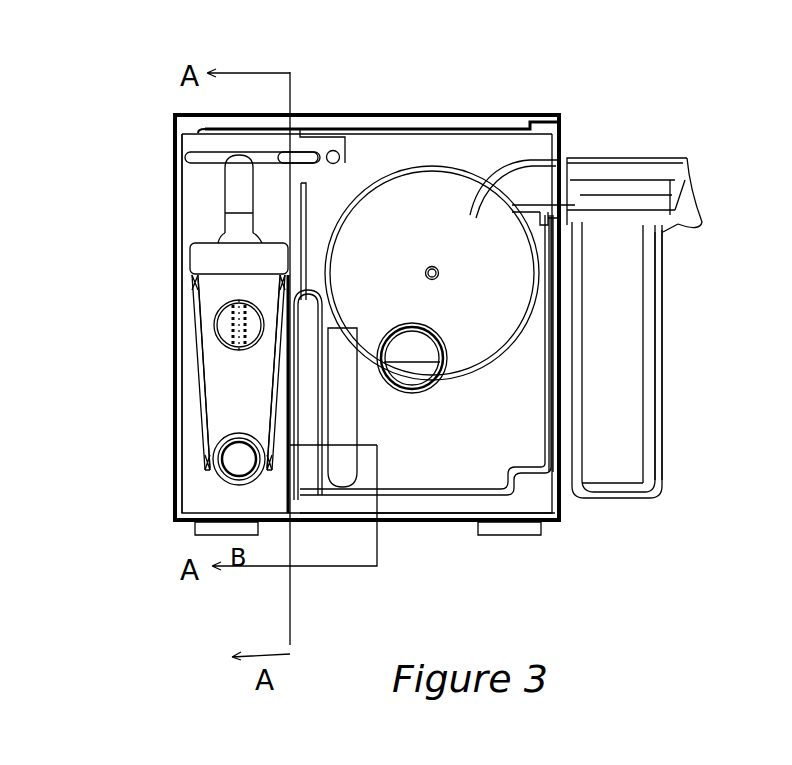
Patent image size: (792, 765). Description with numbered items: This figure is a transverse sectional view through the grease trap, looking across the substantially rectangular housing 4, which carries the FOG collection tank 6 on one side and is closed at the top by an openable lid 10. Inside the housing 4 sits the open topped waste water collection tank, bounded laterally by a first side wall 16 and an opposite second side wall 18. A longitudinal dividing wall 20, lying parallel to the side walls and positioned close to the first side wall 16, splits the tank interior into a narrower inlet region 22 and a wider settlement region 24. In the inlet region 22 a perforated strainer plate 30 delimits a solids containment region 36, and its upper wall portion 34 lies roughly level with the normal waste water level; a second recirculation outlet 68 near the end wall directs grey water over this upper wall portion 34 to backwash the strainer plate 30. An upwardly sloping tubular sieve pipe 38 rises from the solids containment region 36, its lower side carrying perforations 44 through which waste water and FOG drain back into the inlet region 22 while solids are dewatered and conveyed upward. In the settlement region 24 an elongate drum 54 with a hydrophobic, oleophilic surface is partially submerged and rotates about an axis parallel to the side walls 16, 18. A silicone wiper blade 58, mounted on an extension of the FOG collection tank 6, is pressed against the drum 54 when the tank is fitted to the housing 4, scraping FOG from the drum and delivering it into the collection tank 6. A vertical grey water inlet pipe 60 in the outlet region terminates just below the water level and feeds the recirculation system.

The openable lid 10 is at (457, 117).
The housing 4 is at (561, 130).
The first side wall 16 is at (172, 228).
The drum 54 is at (480, 187).
The wiper blade 58 is at (547, 157).
The second side wall 18 is at (558, 425).
The FOG collection tank 6 is at (652, 368).
The settlement region 24 is at (488, 465).
The grey water inlet pipe 60 is at (352, 395).
The dividing wall 20 is at (323, 482).
The strainer plate 30 is at (202, 413).
The upper wall portion 34 is at (212, 282).
The solids containment region 36 is at (225, 385).
The perforations 44 is at (227, 328).
The tubular sieve pipe 38 is at (223, 343).
The second recirculation outlet 68 is at (200, 257).
The inlet region 22 is at (185, 210).